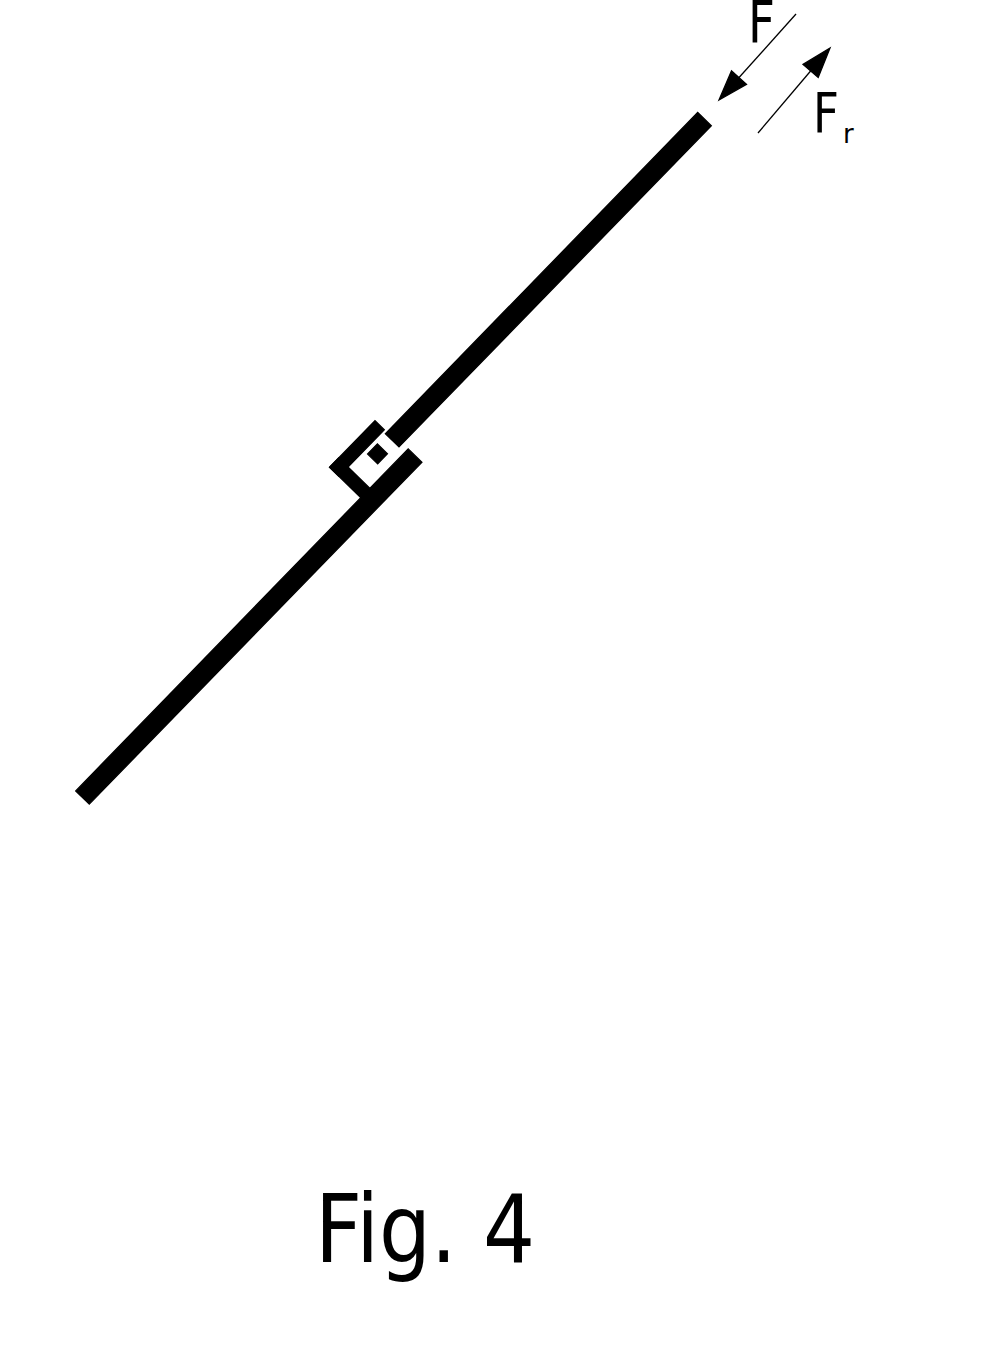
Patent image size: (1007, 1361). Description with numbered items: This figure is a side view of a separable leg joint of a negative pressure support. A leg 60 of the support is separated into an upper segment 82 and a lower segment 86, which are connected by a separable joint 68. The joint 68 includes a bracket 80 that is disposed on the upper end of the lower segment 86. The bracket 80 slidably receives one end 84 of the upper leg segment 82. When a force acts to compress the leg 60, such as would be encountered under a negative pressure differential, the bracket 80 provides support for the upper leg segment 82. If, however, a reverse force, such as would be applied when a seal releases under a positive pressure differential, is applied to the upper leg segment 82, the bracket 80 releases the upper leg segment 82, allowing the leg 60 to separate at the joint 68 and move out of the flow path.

The leg 60 is at (394, 402).
The upper segment 82 is at (618, 222).
The lower segment 86 is at (285, 602).
The separable joint 68 is at (310, 422).
The bracket 80 is at (354, 443).
The end of the upper leg segment 84 is at (403, 450).